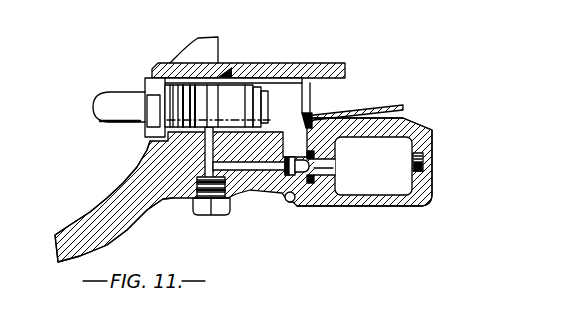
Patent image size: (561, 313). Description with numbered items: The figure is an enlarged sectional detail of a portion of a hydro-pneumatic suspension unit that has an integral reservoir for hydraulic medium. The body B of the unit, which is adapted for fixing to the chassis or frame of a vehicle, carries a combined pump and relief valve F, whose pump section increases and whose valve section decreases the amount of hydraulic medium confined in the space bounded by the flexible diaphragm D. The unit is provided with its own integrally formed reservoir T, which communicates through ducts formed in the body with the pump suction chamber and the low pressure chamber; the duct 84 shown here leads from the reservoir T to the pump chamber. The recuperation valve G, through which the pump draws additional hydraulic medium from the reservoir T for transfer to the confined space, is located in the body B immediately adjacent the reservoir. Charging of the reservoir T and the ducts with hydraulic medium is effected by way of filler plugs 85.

The body B is at (102, 230).
The combined pump and relief valve F is at (228, 107).
The flexible diaphragm D is at (373, 108).
The reservoir T is at (395, 180).
The recuperation valve G is at (289, 202).
The duct 84 is at (253, 165).
The filler plugs 85 is at (195, 218).